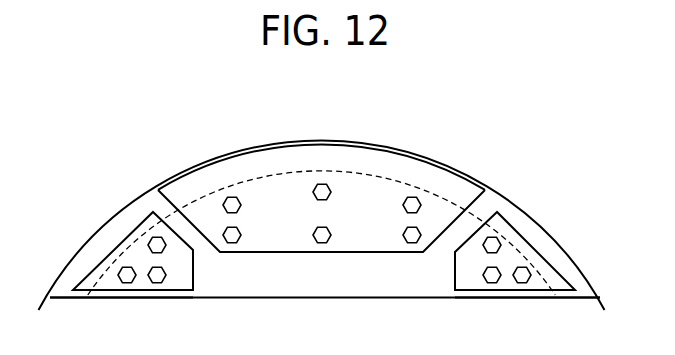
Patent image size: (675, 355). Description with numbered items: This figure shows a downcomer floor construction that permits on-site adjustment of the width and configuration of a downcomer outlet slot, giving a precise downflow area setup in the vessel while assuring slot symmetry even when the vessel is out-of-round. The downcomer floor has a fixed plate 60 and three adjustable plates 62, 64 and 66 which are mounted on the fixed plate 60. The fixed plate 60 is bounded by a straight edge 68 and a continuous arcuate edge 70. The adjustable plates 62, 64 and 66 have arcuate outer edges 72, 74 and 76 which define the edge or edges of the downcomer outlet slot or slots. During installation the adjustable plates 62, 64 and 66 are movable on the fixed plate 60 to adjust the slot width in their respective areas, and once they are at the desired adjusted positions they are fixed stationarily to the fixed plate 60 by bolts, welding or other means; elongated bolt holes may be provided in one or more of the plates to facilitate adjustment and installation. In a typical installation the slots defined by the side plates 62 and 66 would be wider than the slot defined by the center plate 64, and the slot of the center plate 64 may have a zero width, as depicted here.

The fixed plate 60 is at (282, 278).
The adjustable plate 62 is at (178, 280).
The adjustable plate 64 is at (360, 242).
The adjustable plate 66 is at (467, 280).
The straight edge 68 is at (115, 298).
The continuous arcuate edge 70 is at (130, 238).
The arcuate outer edge 72 is at (102, 256).
The arcuate outer edge 74 is at (299, 145).
The arcuate outer edge 76 is at (548, 255).